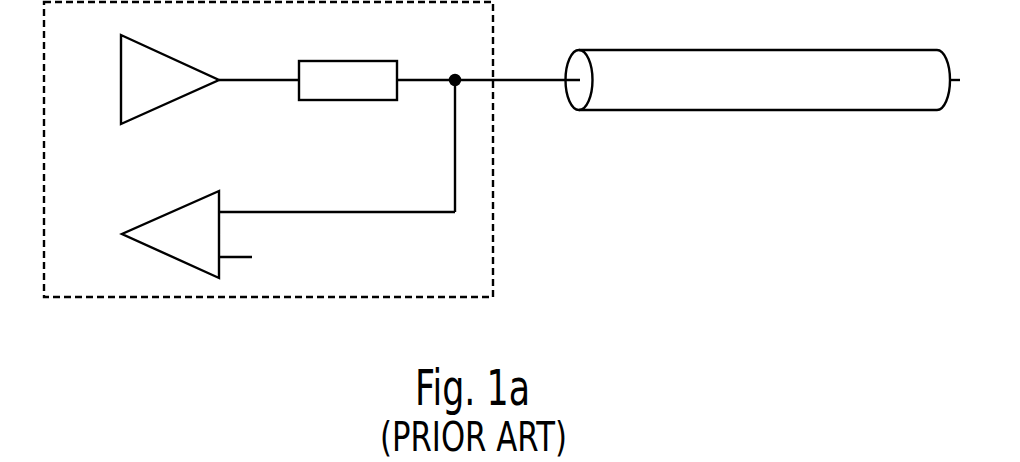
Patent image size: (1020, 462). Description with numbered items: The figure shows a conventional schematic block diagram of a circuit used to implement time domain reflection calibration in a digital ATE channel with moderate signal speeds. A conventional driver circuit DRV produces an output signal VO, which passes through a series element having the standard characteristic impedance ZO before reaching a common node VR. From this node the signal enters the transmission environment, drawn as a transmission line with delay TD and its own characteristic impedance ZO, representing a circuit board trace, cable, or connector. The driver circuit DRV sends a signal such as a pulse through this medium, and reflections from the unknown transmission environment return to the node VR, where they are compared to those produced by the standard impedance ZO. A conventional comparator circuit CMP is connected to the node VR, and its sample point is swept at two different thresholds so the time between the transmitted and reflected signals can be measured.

The driver circuit DRV is at (142, 79).
The driver output signal VO is at (259, 62).
The characteristic impedance ZO is at (539, 59).
The reflected signal node VR is at (399, 143).
The comparator circuit CMP is at (157, 234).
The transmission line delay TD is at (763, 60).